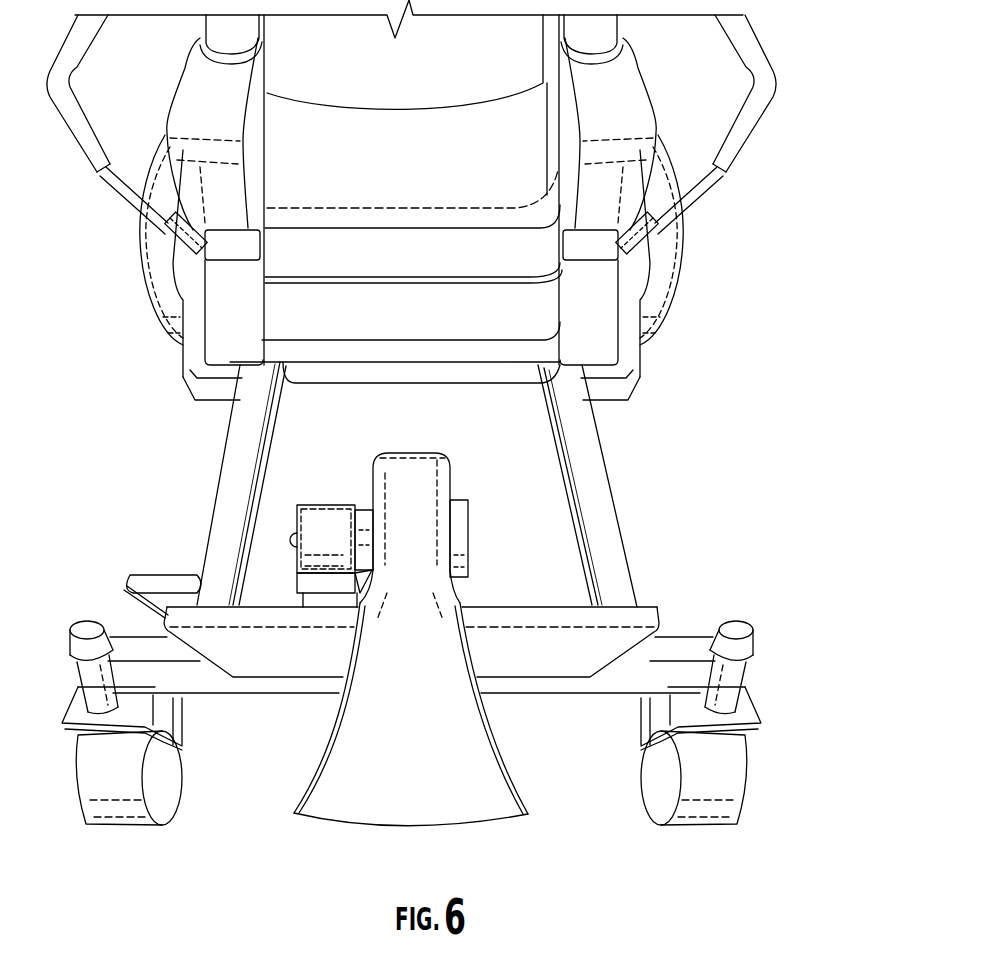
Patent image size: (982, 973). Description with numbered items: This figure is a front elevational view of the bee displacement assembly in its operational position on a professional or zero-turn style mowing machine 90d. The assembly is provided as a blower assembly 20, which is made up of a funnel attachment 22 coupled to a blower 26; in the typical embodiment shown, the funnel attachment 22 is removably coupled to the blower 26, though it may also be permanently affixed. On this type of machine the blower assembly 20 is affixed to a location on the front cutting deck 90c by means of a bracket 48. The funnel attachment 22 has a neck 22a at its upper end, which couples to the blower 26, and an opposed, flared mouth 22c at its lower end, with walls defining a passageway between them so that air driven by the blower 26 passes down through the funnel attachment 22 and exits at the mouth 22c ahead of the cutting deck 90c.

The blower assembly 20 is at (275, 557).
The funnel attachment 22 is at (467, 770).
The neck 22a is at (462, 593).
The mouth 22c is at (469, 845).
The blower 26 is at (417, 512).
The bracket 48 is at (323, 583).
The cutting deck 90c is at (530, 503).
The professional or zero-turn style mowing machine 90d is at (704, 267).